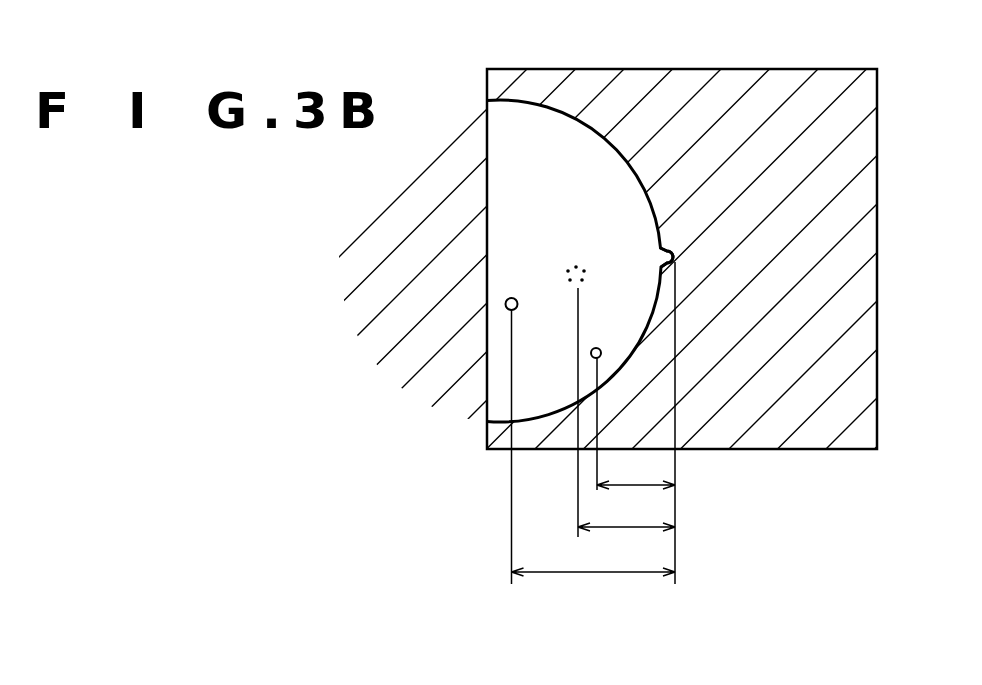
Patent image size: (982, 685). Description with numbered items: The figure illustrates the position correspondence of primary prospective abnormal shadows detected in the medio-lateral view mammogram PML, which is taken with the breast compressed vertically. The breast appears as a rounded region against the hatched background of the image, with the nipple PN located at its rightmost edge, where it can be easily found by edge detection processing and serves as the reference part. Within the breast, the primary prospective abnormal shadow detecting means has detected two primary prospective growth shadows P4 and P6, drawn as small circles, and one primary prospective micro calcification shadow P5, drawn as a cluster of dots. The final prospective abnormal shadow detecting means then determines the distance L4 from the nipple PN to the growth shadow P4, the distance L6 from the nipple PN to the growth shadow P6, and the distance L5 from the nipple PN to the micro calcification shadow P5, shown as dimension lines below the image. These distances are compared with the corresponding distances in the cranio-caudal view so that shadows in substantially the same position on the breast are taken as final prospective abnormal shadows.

The medio-lateral view mammogram PML is at (627, 54).
The nipple PN is at (673, 252).
The primary prospective growth shadow P4 is at (515, 285).
The primary prospective micro calcification shadow P5 is at (576, 255).
The primary prospective growth shadow P6 is at (603, 334).
The distance L4 is at (594, 447).
The distance L5 is at (626, 412).
The distance L6 is at (636, 376).